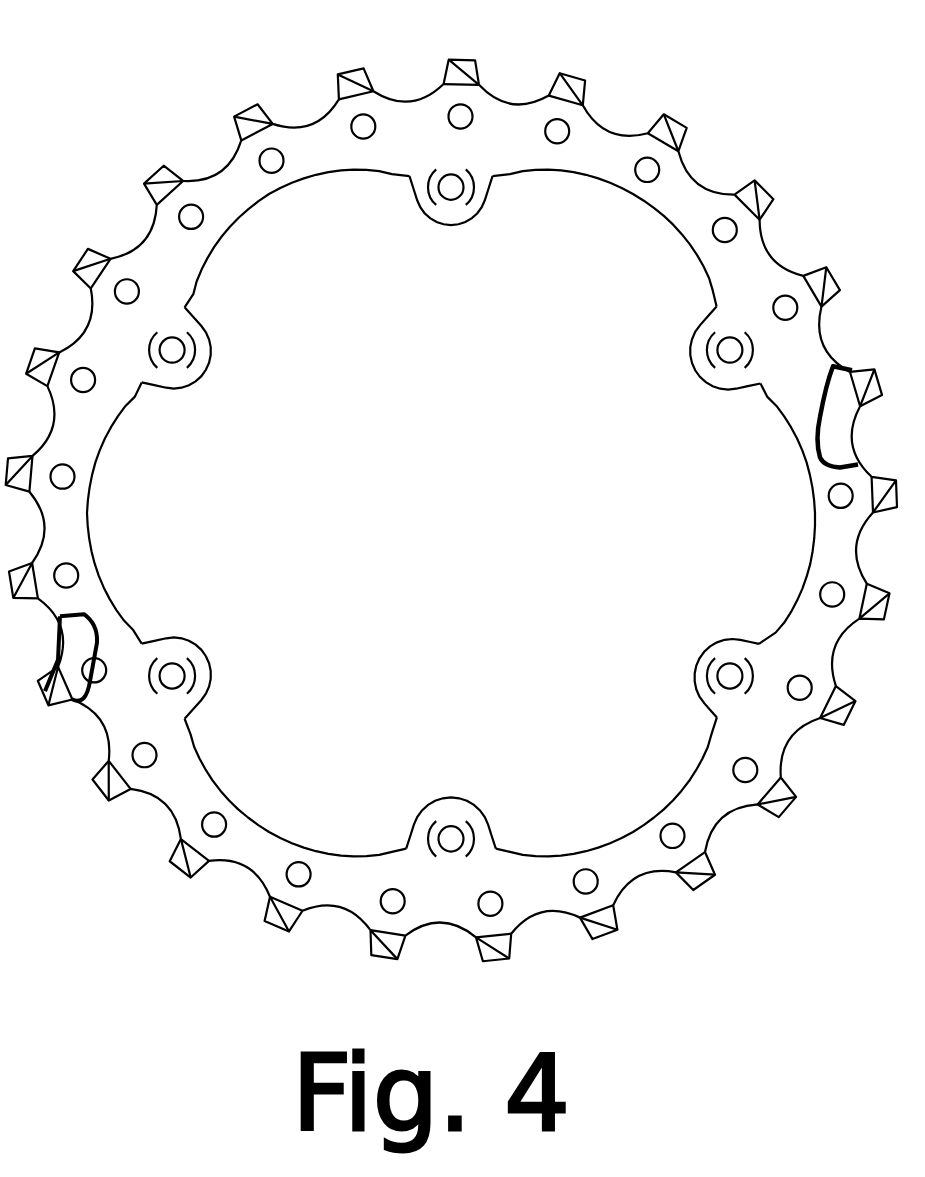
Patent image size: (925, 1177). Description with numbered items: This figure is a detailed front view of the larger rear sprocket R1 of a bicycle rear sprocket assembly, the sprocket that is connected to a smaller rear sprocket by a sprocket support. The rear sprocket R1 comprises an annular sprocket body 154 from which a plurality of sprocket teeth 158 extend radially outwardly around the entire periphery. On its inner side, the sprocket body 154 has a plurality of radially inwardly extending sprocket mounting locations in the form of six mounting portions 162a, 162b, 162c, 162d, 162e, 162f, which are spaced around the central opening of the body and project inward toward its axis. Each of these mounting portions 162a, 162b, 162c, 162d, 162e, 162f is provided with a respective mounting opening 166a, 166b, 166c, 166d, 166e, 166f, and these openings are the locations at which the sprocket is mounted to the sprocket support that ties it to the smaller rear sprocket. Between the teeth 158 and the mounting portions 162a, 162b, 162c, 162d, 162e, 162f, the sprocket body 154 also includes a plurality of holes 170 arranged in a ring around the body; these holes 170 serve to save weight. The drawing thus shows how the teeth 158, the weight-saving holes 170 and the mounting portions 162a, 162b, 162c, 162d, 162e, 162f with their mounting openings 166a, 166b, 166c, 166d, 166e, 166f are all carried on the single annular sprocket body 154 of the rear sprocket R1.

The rear sprocket R1 is at (91, 127).
The sprocket body 154 is at (230, 190).
The sprocket teeth 158 is at (360, 65).
The holes 170 is at (272, 158).
The mounting portion 162a is at (480, 814).
The mounting portion 162b is at (190, 648).
The mounting portion 162c is at (173, 390).
The mounting portion 162d is at (472, 217).
The mounting portion 162e is at (698, 336).
The mounting portion 162f is at (724, 645).
The mounting opening 166a is at (445, 838).
The mounting opening 166b is at (176, 674).
The mounting opening 166c is at (178, 352).
The mounting opening 166d is at (455, 188).
The mounting opening 166e is at (728, 354).
The mounting opening 166f is at (726, 676).